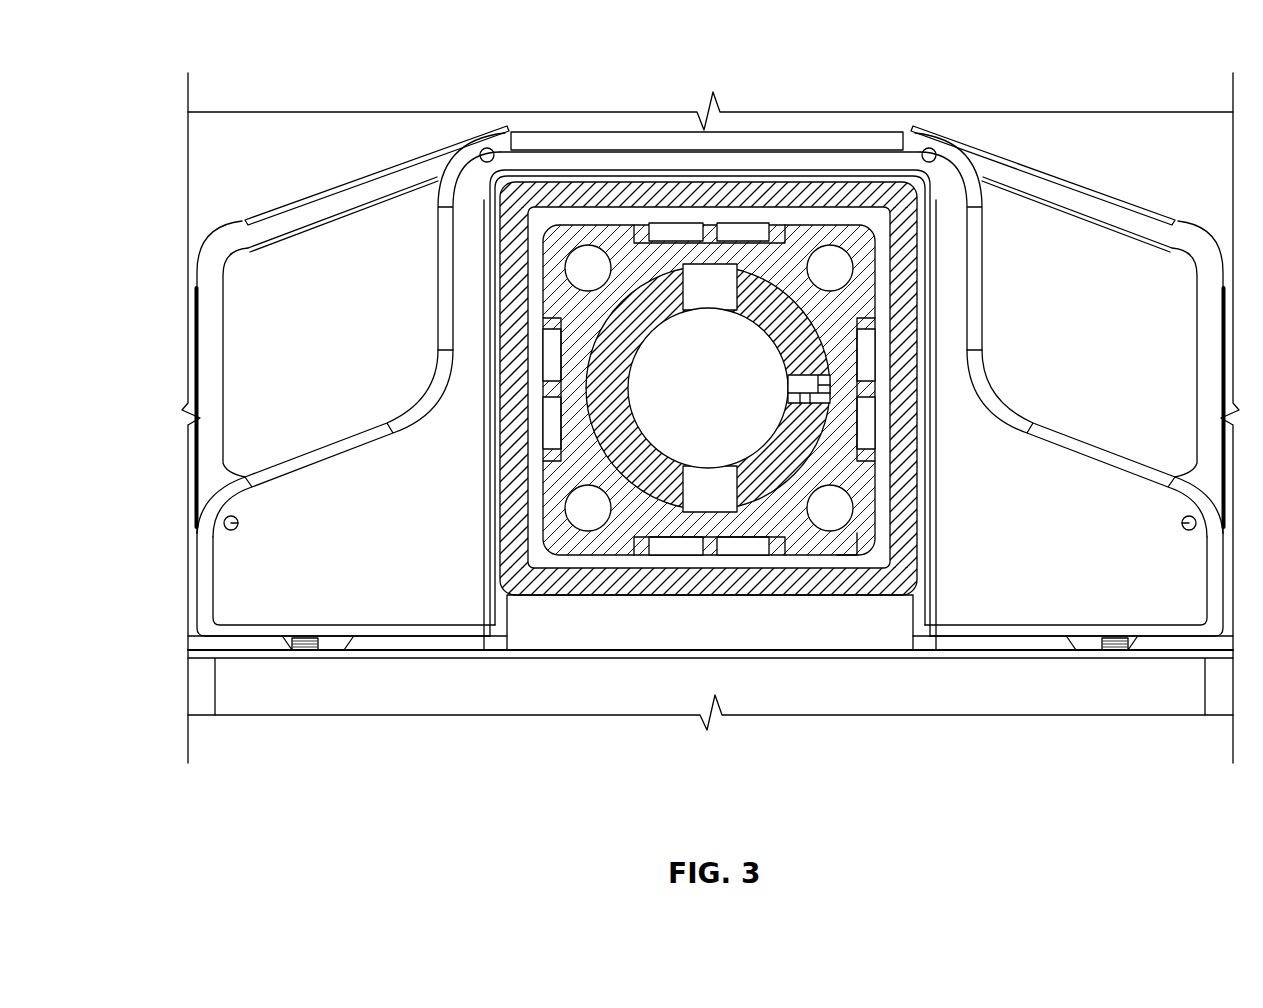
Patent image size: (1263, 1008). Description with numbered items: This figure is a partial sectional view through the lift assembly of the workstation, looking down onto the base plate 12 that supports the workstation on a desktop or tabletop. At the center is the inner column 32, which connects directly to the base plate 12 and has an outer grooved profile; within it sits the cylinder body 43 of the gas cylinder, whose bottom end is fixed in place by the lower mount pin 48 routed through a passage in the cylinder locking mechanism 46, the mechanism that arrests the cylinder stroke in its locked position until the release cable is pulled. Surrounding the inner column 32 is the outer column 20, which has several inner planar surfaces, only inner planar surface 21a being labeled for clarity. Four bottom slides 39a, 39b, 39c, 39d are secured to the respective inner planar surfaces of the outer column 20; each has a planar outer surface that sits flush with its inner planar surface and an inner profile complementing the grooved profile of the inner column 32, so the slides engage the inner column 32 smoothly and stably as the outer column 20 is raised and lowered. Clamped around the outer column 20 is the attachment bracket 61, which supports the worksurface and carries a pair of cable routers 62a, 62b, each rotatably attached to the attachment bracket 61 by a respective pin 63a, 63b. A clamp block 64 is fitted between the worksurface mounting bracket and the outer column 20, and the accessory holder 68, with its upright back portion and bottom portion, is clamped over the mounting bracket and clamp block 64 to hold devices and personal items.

The base plate 12 is at (1115, 130).
The accessory holder 68 is at (255, 690).
The attachment bracket 61 is at (1213, 608).
The cable router 62a is at (318, 205).
The cable router 62b is at (1142, 225).
The pin 63a is at (238, 526).
The pin 63b is at (1175, 528).
The outer column 20 is at (678, 590).
The inner planar surface 21a is at (822, 552).
The clamp block 64 is at (728, 635).
The bottom slide 39a is at (540, 318).
The bottom slide 39b is at (612, 565).
The bottom slide 39c is at (879, 271).
The bottom slide 39d is at (604, 207).
The inner column 32 is at (798, 507).
The cylinder body 43 is at (706, 332).
The lower mount pin 48 is at (719, 288).
The cylinder locking mechanism 46 is at (812, 380).